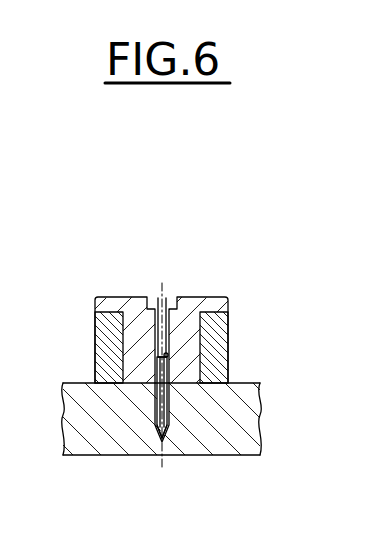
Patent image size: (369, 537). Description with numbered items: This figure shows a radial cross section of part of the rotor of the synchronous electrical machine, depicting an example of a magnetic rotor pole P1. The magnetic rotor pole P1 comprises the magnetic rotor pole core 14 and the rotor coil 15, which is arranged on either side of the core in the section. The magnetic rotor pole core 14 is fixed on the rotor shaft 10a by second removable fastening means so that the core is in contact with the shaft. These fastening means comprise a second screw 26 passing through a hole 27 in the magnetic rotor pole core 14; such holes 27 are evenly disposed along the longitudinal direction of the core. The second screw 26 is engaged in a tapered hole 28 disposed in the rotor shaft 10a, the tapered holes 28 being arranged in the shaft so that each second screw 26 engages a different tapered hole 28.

The magnetic rotor pole core 14 is at (213, 294).
The rotor coil 15 is at (100, 347).
The second screw 26 is at (170, 294).
The hole 27 is at (168, 355).
The tapered hole 28 is at (150, 432).
The rotor shaft 10a is at (255, 427).
The magnetic rotor pole P1 is at (91, 290).